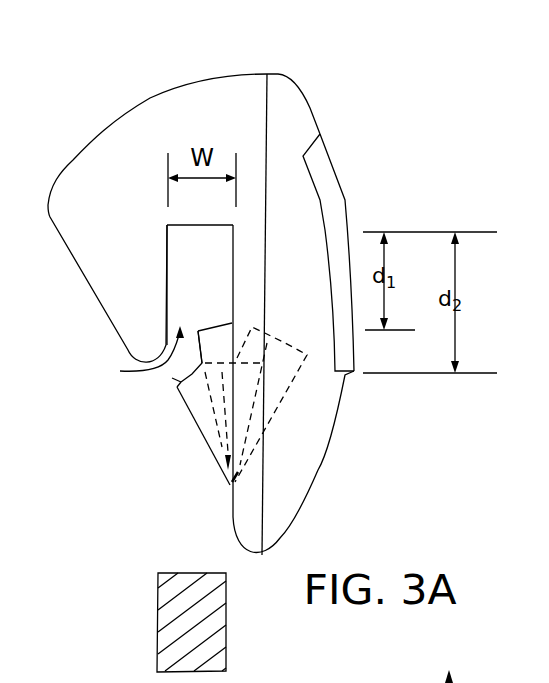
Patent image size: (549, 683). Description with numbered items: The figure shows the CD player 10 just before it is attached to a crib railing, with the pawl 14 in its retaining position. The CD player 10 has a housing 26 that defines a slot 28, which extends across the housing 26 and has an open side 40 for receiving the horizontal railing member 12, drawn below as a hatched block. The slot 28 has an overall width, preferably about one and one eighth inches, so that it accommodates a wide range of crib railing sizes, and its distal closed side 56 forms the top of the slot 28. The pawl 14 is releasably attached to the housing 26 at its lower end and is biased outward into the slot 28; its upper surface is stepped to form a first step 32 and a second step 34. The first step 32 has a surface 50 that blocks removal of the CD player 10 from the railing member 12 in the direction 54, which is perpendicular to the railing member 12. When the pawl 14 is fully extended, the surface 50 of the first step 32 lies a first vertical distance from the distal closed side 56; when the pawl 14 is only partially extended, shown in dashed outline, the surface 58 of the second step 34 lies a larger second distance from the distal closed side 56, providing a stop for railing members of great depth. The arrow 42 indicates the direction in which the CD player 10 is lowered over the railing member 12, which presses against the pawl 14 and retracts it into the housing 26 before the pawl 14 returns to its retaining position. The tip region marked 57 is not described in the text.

The CD player 10 is at (372, 110).
The horizontal railing member 12 is at (158, 617).
The pawl 14 is at (186, 414).
The housing 26 is at (78, 260).
The slot 28 is at (186, 268).
The first step 32 is at (198, 331).
The second step 34 is at (177, 387).
The open side 40 is at (135, 352).
The arrow 42 is at (200, 64).
The surface 50 is at (222, 323).
The direction 54 is at (450, 663).
The distal closed side 56 is at (178, 222).
The blade tip 57 is at (216, 452).
The surface 58 is at (172, 378).